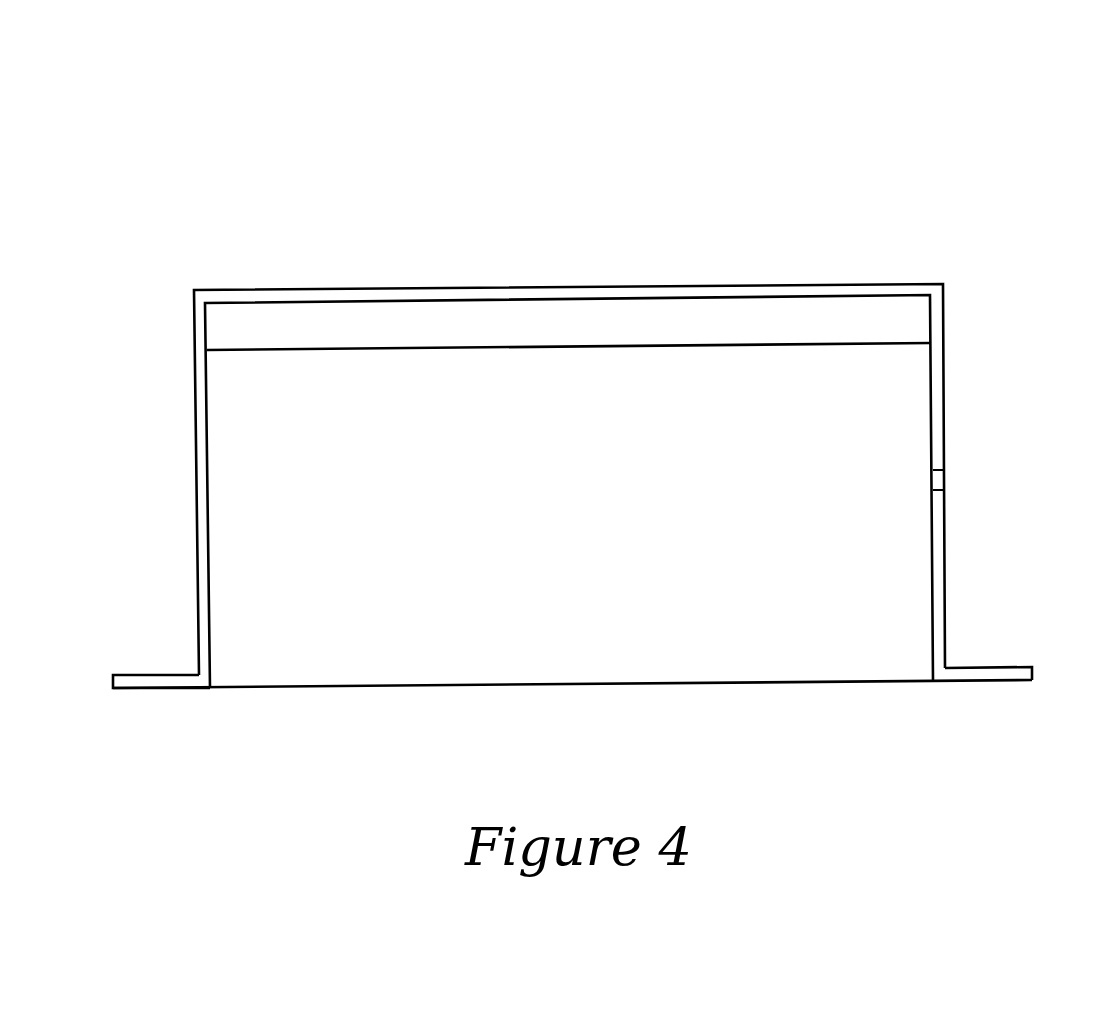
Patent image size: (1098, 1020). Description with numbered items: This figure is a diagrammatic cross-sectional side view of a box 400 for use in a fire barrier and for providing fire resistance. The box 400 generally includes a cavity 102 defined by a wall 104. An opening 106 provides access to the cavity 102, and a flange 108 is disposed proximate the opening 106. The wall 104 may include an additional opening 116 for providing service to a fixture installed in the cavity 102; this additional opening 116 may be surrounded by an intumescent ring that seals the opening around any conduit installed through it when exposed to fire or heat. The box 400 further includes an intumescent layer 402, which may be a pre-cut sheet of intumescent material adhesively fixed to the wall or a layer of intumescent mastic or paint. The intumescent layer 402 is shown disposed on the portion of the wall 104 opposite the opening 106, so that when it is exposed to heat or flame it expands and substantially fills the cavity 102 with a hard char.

The box 400 is at (826, 134).
The cavity 102 is at (800, 382).
The wall 104 is at (208, 480).
The opening 106 is at (748, 684).
The flange 108 is at (148, 680).
The opening 116 is at (940, 479).
The intumescent layer 402 is at (568, 322).